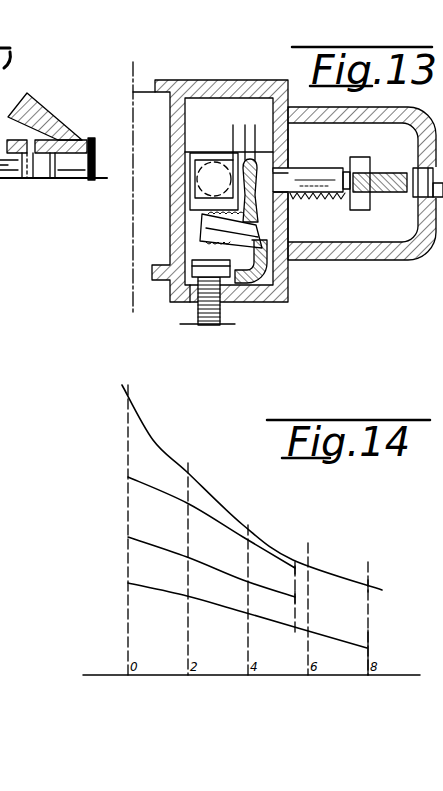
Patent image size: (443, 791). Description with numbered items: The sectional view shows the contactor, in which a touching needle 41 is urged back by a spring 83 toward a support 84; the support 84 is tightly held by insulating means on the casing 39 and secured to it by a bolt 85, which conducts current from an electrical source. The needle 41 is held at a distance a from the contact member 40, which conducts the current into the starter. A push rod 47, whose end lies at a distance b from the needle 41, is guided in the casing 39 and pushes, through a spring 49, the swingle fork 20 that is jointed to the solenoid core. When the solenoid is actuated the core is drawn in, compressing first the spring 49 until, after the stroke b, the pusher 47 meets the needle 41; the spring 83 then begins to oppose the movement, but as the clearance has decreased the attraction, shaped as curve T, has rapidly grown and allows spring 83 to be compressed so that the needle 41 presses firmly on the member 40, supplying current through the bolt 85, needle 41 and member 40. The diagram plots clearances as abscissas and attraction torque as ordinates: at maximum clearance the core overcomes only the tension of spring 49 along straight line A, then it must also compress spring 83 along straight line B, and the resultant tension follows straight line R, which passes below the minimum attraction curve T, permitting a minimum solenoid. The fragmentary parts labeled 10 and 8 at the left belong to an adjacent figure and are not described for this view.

In FIG. 13, the casing 39 is at (266, 306).
In FIG. 13, the contact member 40 is at (200, 166).
In FIG. 13, the touching needle 41 is at (286, 211).
In FIG. 13, the push rod 47 is at (302, 178).
In FIG. 13, the spring 49 is at (326, 201).
In FIG. 13, the swingle fork 20 is at (382, 173).
In FIG. 13, the spring 83 is at (212, 248).
In FIG. 13, the support 84 is at (287, 271).
In FIG. 13, the bolt 85 is at (205, 327).
In FIG. 13, the clearance a is at (245, 130).
In FIG. 13, the clearance b is at (273, 130).
In FIG. 13, the base 10 is at (12, 140).
In FIG. 13, the frame 8 is at (4, 191).
In FIG. 14, the attraction curve T is at (283, 548).
In FIG. 14, the resultant tension line R is at (166, 500).
In FIG. 14, the spring 83 tension line B is at (217, 569).
In FIG. 14, the spring 49 tension line A is at (273, 623).